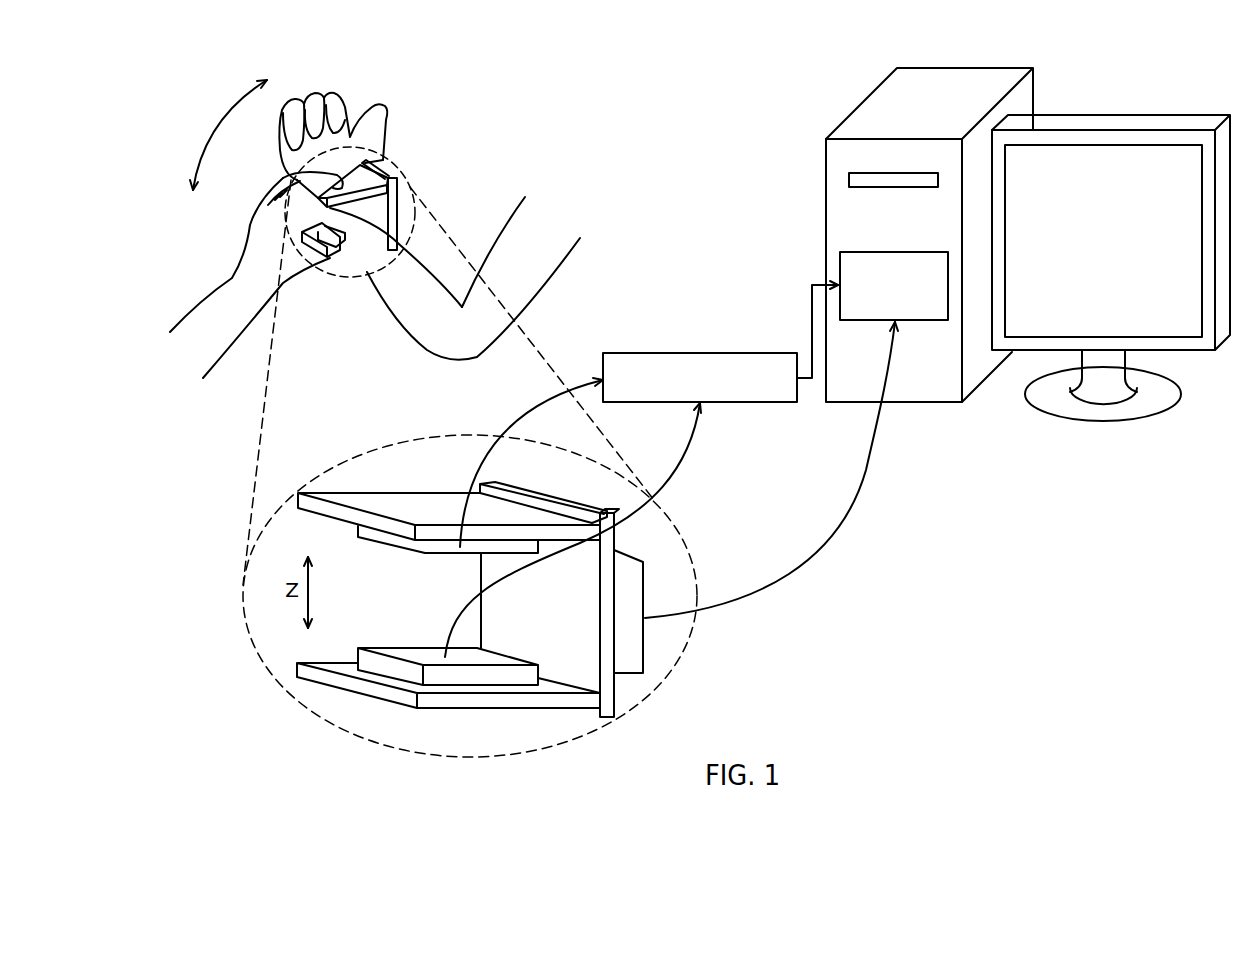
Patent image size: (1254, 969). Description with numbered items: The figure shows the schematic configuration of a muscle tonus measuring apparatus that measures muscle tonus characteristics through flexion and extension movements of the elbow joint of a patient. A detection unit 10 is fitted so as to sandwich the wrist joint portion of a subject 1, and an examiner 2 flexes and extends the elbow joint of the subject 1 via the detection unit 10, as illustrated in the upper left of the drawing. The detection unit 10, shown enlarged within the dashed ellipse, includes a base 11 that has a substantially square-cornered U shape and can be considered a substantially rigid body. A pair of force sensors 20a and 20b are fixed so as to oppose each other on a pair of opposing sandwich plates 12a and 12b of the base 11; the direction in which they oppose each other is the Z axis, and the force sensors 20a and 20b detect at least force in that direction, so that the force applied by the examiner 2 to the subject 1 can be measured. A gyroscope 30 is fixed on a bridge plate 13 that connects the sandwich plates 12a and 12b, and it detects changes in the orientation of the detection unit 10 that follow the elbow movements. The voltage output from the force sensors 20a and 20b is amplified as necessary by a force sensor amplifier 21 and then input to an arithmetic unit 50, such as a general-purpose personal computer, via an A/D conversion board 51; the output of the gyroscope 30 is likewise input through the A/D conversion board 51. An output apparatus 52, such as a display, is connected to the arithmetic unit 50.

The subject 1 is at (338, 107).
The examiner 2 is at (227, 285).
The detection unit 10 is at (380, 168).
The base 11 is at (618, 697).
The sandwich plate 12a is at (407, 497).
The sandwich plate 12b is at (470, 700).
The bridge plate 13 is at (543, 498).
The force sensor 20a is at (390, 540).
The force sensor 20b is at (417, 655).
The force sensor amplifier 21 is at (758, 353).
The gyroscope 30 is at (638, 643).
The arithmetic unit 50 is at (870, 103).
The A/D conversion board 51 is at (917, 322).
The output apparatus 52 is at (1143, 120).